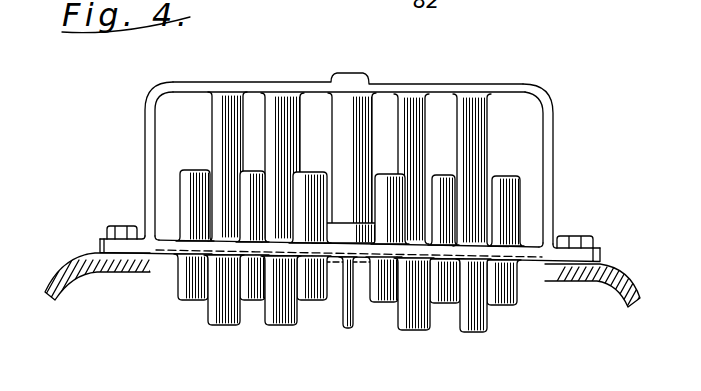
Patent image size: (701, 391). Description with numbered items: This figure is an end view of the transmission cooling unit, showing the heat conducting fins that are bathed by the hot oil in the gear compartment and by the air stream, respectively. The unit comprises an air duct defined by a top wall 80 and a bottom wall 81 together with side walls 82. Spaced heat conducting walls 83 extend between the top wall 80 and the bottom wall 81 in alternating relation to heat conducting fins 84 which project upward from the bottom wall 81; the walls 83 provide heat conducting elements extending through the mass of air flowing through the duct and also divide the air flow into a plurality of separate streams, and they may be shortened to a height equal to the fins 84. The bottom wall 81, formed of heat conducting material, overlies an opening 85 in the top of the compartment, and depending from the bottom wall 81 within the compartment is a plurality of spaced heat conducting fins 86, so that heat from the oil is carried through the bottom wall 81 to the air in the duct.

The top wall 80 is at (405, 84).
The bottom wall 81 is at (525, 246).
The side walls 82 is at (146, 146).
The heat conducting walls 83 is at (207, 111).
The heat conducting fins 84 is at (180, 184).
The opening 85 is at (152, 266).
The heat conducting fins 86 is at (207, 317).